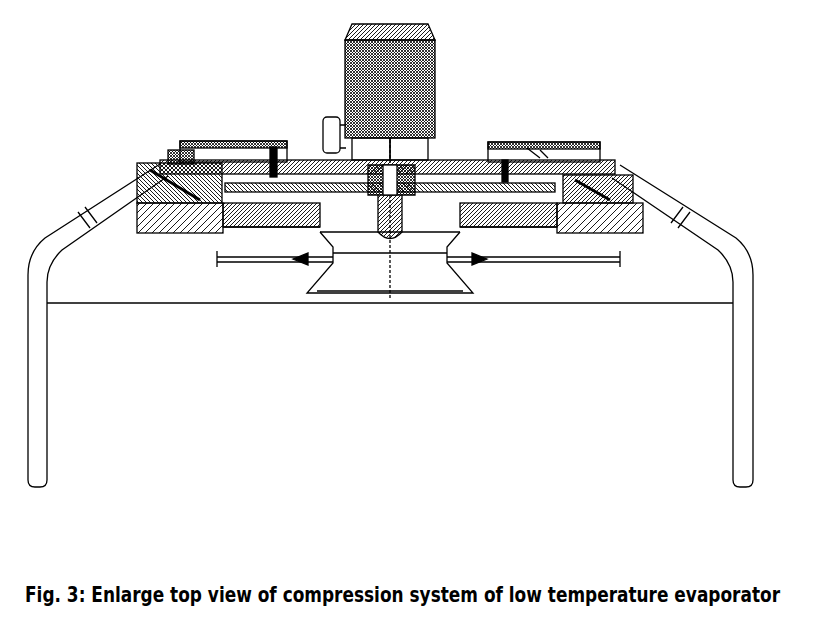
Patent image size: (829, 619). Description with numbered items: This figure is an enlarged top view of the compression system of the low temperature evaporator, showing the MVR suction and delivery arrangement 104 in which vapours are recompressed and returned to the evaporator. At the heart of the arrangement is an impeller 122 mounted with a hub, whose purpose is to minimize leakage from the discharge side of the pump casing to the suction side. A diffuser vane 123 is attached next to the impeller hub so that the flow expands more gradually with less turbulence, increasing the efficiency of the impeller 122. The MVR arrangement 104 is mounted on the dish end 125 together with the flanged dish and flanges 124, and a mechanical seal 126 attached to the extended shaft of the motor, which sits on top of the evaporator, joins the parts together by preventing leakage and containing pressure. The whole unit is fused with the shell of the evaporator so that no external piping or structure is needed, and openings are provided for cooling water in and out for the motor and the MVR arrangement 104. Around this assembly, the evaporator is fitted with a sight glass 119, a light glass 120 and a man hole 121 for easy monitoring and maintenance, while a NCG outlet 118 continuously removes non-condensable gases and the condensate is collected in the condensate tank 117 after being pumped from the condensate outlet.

The MVR suction and delivery arrangement 104 is at (488, 263).
The condensate tank 117 is at (603, 180).
The NCG outlet 118 is at (640, 238).
The sight glass 119 is at (182, 150).
The light glass 120 is at (733, 242).
The man hole 121 is at (440, 148).
The impeller with hub 122 is at (442, 90).
The diffuser vane 123 is at (148, 167).
The dish and flanges 124 is at (210, 160).
The dish end 125 is at (274, 150).
The mechanical seal 126 is at (302, 165).